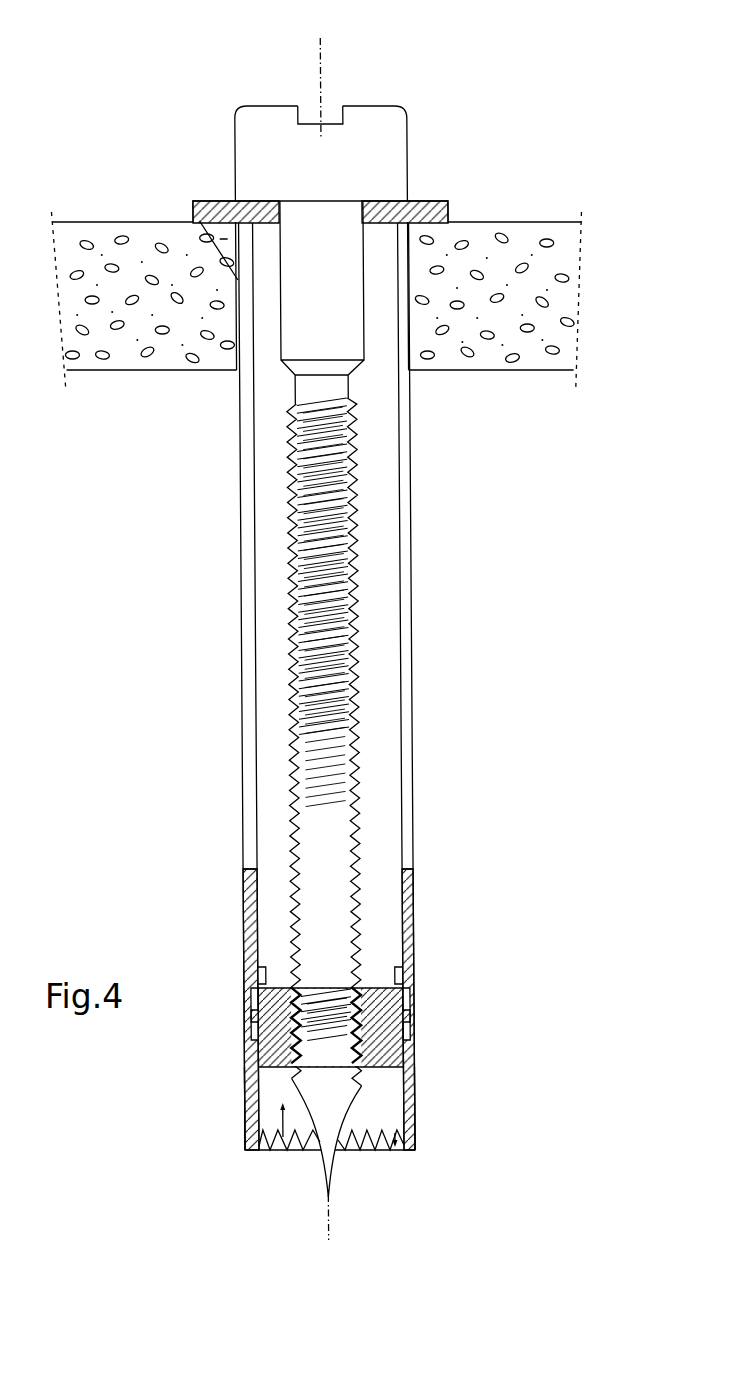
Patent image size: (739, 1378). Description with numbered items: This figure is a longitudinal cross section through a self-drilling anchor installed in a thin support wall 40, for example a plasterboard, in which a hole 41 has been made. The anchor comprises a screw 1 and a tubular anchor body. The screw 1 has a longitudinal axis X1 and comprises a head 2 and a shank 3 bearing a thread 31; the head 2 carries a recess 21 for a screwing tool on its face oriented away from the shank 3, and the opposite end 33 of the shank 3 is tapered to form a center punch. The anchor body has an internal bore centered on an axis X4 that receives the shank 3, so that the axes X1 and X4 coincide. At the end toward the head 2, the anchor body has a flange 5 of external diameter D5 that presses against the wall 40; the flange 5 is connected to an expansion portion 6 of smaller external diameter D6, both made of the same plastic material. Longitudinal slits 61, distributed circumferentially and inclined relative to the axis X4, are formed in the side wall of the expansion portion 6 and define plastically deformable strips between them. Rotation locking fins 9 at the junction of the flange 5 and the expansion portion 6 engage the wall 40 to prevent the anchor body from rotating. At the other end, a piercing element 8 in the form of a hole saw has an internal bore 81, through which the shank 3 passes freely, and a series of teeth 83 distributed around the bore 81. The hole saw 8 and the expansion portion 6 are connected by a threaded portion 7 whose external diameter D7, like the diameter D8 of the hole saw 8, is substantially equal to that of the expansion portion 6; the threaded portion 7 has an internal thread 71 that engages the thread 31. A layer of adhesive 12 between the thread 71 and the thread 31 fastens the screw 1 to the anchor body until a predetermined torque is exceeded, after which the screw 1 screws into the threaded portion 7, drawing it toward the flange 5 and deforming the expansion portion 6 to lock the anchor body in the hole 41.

The screw 1 is at (192, 80).
The head 2 is at (302, 115).
The recess 21 is at (331, 112).
The shank 3 is at (345, 674).
The thread 31 is at (353, 631).
The opposite end of the shank 33 is at (322, 1156).
The flange 5 is at (432, 200).
The expansion portion 6 is at (325, 706).
The longitudinal slits 61 is at (229, 732).
The threaded portion 7 is at (347, 1002).
The internal thread 71 is at (299, 1014).
The layer of adhesive 12 is at (353, 1027).
The piercing element 8 is at (332, 1128).
The internal bore 81 is at (274, 1148).
The teeth 83 is at (385, 1148).
The rotation locking fins 9 is at (201, 222).
The support wall 40 is at (352, 324).
The hole 41 is at (405, 372).
The longitudinal axis of the screw X1 is at (317, 50).
The axis of the anchor body bore X4 is at (318, 1203).
The external diameter of the flange D5 is at (455, 212).
The external diameter of the expansion portion D6 is at (415, 901).
The external diameter of the threaded portion D7 is at (416, 1054).
The external diameter of the hole saw D8 is at (416, 1139).